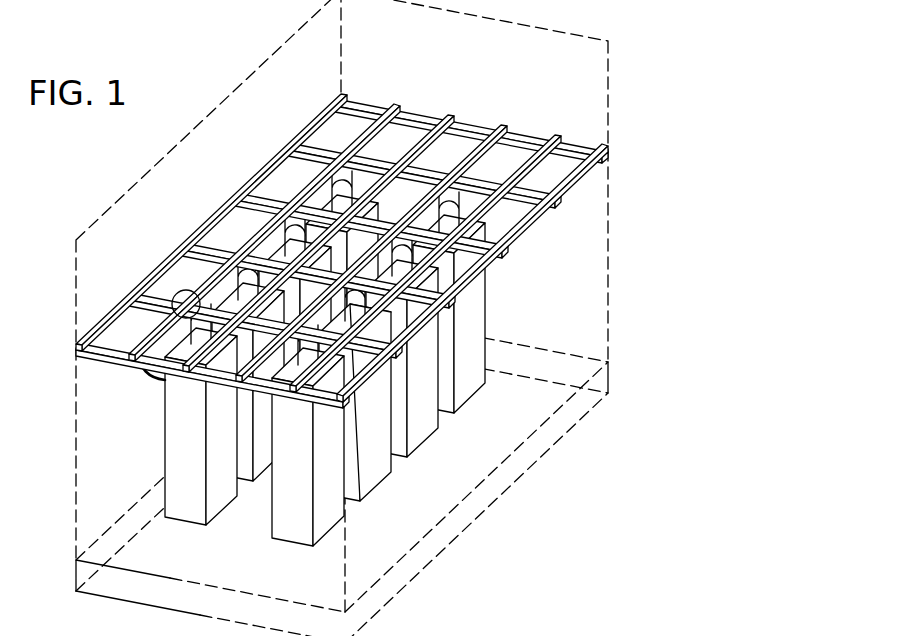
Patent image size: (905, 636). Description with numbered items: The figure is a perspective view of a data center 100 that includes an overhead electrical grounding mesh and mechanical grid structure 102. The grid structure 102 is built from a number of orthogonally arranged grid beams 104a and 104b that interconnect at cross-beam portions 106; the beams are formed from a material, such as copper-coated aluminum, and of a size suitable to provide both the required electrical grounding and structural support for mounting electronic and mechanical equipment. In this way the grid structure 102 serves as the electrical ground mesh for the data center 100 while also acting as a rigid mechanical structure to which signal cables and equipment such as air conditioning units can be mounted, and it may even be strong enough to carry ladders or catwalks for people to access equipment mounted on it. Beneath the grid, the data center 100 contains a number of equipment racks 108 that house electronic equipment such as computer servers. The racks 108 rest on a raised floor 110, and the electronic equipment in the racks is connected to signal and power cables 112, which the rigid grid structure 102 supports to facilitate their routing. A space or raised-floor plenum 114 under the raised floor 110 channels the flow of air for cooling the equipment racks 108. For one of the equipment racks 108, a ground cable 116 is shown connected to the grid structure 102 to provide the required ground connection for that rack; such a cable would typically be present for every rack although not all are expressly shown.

The data center 100 is at (185, 58).
The grid structure 102 is at (342, 215).
The grid beam 104a is at (264, 165).
The grid beam 104b is at (535, 130).
The cross-beam portion 106 is at (174, 294).
The equipment rack 108 is at (177, 451).
The raised floor 110 is at (497, 432).
The signal and power cables 112 is at (440, 278).
The raised-floor plenum 114 is at (165, 604).
The ground cable 116 is at (162, 380).